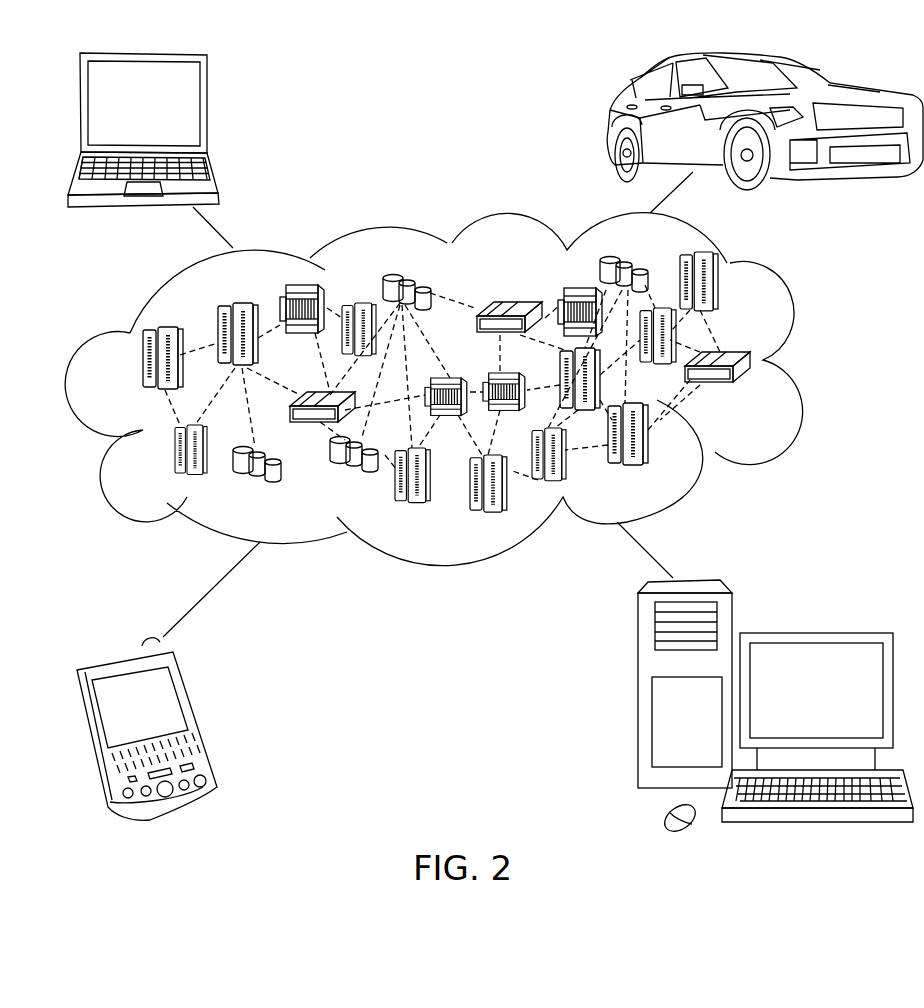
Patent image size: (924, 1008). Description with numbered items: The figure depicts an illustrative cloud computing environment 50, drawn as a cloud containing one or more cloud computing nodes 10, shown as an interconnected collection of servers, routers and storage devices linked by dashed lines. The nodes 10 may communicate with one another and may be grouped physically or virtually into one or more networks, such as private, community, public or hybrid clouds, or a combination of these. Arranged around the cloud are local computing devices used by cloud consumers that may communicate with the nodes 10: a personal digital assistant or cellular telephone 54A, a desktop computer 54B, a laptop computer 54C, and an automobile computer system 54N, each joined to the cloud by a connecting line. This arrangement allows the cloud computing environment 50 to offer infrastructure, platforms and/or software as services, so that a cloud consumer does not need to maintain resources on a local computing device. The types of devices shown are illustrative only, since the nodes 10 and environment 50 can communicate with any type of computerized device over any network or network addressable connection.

The cloud computing node 10 is at (762, 394).
The cloud computing environment 50 is at (817, 363).
The personal digital assistant or cellular telephone 54A is at (200, 720).
The desktop computer 54B is at (813, 632).
The laptop computer 54C is at (207, 110).
The automobile computer system 54N is at (607, 123).